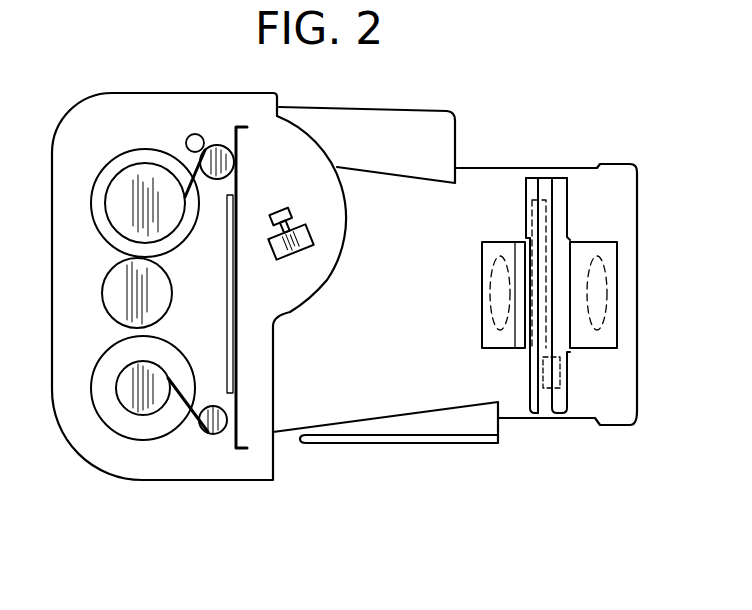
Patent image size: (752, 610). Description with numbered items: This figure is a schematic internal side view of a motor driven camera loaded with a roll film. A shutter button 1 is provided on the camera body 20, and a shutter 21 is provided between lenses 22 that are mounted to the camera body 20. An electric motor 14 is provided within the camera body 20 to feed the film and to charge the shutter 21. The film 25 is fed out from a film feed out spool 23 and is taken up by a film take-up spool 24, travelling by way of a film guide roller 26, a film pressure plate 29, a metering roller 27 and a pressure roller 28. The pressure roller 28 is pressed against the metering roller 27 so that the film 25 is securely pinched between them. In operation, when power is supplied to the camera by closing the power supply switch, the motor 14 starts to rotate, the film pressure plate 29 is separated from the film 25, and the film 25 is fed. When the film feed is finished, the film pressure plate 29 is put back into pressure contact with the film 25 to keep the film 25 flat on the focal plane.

The shutter button 1 is at (302, 228).
The electric motor 14 is at (160, 293).
The camera body 20 is at (405, 106).
The shutter 21 is at (540, 232).
The lenses 22 is at (497, 275).
The film feed out spool 23 is at (102, 377).
The film take-up spool 24 is at (112, 170).
The film 25 is at (188, 180).
The film guide roller 26 is at (212, 432).
The metering roller 27 is at (218, 145).
The pressure roller 28 is at (193, 134).
The film pressure plate 29 is at (232, 355).